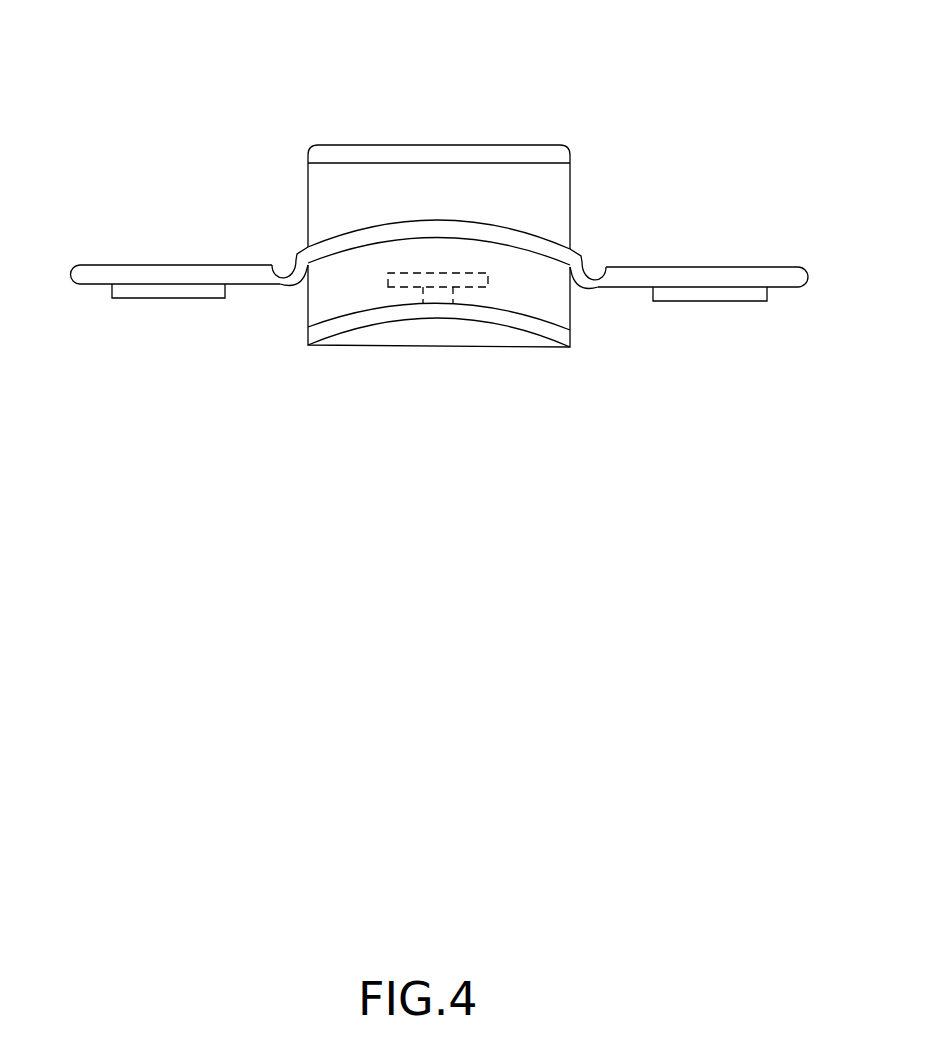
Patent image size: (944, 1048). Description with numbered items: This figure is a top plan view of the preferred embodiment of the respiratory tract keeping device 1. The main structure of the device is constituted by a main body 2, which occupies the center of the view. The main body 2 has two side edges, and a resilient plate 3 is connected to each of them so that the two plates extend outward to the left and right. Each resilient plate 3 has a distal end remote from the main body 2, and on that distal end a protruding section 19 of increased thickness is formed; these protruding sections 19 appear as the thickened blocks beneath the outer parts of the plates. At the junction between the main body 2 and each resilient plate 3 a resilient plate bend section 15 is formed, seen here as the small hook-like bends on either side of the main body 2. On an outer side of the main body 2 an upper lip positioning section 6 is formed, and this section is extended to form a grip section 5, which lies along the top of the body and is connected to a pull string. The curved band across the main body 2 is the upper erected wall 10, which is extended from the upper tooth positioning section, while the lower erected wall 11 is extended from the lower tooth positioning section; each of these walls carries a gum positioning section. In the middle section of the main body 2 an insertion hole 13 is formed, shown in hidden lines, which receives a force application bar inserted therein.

The respiratory tract keeping device 1 is at (298, 139).
The main body 2 is at (512, 228).
The resilient plate 3 is at (200, 277).
The grip section 5 is at (418, 153).
The upper lip positioning section 6 is at (463, 192).
The upper erected wall 10 is at (529, 325).
The lower erected wall 11 is at (398, 287).
The insertion hole 13 is at (437, 293).
The resilient plate bend section 15 is at (292, 270).
The protruding section 19 is at (147, 290).